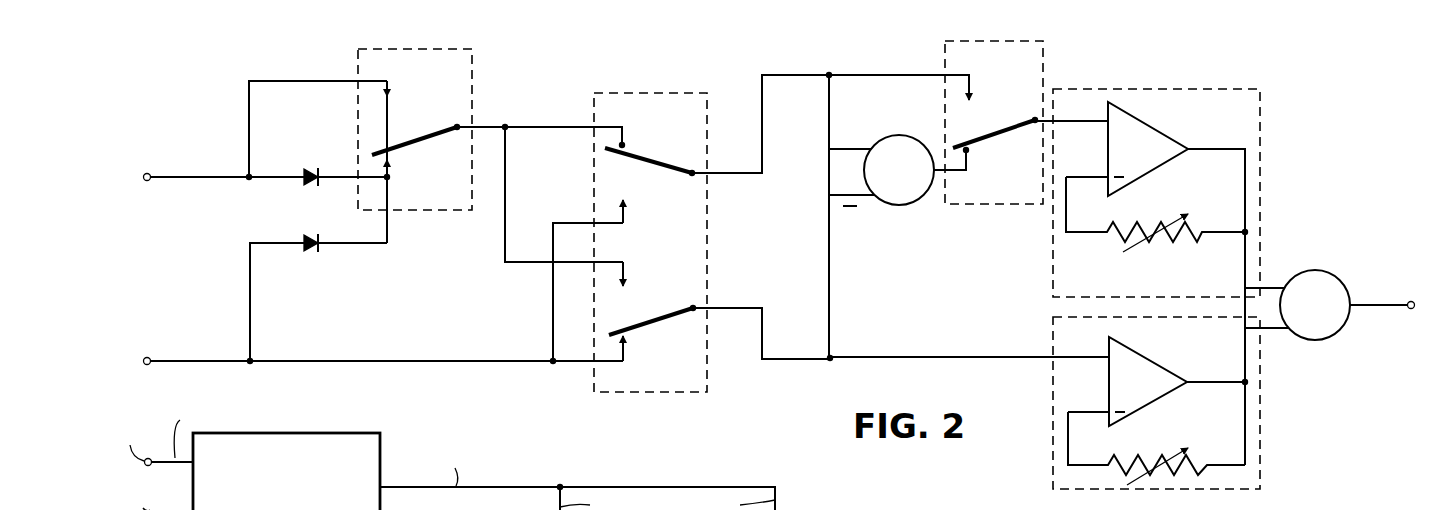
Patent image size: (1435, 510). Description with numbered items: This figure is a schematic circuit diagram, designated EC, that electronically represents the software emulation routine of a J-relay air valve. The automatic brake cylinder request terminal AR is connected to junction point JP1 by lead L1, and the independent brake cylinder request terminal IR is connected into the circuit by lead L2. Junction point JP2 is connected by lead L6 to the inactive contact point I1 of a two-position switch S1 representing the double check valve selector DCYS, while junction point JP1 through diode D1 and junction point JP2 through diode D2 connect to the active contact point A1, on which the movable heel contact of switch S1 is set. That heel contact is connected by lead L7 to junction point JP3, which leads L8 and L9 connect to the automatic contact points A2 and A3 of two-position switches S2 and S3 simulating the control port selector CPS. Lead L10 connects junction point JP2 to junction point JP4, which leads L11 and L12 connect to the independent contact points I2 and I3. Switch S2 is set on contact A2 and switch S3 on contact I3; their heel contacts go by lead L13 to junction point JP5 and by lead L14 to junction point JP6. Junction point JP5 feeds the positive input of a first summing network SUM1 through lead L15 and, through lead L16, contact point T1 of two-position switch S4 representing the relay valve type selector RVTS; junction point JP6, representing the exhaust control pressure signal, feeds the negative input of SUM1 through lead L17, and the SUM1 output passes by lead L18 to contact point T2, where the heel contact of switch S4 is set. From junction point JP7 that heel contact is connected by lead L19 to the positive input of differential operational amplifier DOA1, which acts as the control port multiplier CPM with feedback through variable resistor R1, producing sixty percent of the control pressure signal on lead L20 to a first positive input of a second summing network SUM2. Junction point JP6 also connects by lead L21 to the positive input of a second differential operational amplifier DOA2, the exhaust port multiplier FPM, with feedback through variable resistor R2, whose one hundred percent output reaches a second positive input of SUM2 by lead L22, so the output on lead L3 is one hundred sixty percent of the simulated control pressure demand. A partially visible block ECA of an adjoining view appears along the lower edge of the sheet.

The automatic brake cylinder request terminal AR is at (140, 174).
The independent brake cylinder request terminal IR is at (144, 359).
The lead L1 is at (203, 175).
The lead L2 is at (202, 360).
The lead L3 is at (1385, 308).
The lead L6 is at (300, 81).
The lead L7 is at (462, 133).
The lead L8 is at (556, 130).
The lead L9 is at (505, 246).
The lead L10 is at (412, 360).
The lead L11 is at (553, 292).
The lead L12 is at (561, 364).
The lead L13 is at (734, 176).
The lead L14 is at (734, 305).
The lead L15 is at (828, 111).
The line 16 L16 is at (916, 75).
The lead L17 is at (832, 290).
The lead L18 is at (962, 172).
The lead L19 is at (1072, 123).
The lead L20 is at (1250, 262).
The lead L21 is at (998, 357).
The lead L22 is at (1248, 366).
The junction point JP1 is at (249, 180).
The junction point JP2 is at (253, 359).
The junction point JP3 is at (506, 125).
The junction point JP4 is at (552, 358).
The junction point JP5 is at (829, 73).
The junction point JP6 is at (832, 356).
The junction point 7 JP7 is at (1037, 118).
The diode D1 is at (306, 173).
The diode D2 is at (304, 246).
The double check valve selector DCYS is at (414, 49).
The control port selector CPS is at (653, 93).
The relay valve type selector RVTS is at (998, 41).
The control port multiplier CPM is at (1152, 89).
The exhaust port multiplier FPM is at (1170, 489).
The two-position switch S1 is at (413, 142).
The two-position switch S2 is at (656, 166).
The two-position switch S3 is at (650, 322).
The two-position switch S4 is at (1003, 135).
The inactive contact point I1 is at (392, 95).
The independent contact point I2 is at (626, 208).
The independent contact point I3 is at (627, 338).
The active contact point A1 is at (390, 165).
The automatic contact point A2 is at (625, 146).
The automatic contact point A3 is at (626, 282).
The contact point T1 is at (975, 100).
The contact point T2 is at (969, 151).
The electronically controlled logic circuit EC is at (764, 245).
The first summing network SUM1 is at (898, 206).
The second summing network SUM2 is at (1315, 270).
The differential operational amplifier DOA1 is at (1165, 135).
The second differential operational amplifier DOA2 is at (1177, 356).
The variable resistor R1 is at (1160, 236).
The variable resistor R2 is at (1151, 466).
The electronic controller section A ECA is at (479, 453).